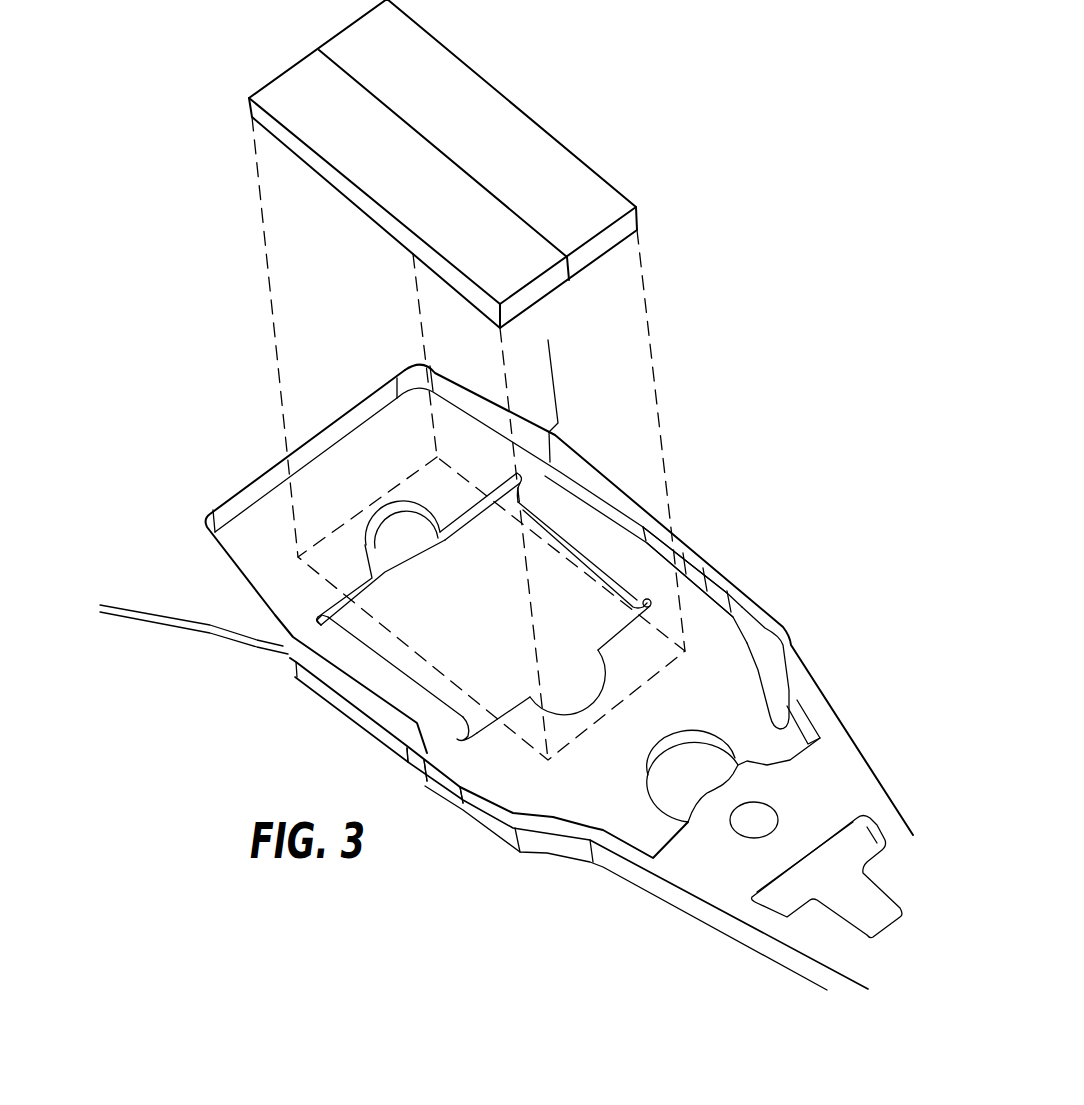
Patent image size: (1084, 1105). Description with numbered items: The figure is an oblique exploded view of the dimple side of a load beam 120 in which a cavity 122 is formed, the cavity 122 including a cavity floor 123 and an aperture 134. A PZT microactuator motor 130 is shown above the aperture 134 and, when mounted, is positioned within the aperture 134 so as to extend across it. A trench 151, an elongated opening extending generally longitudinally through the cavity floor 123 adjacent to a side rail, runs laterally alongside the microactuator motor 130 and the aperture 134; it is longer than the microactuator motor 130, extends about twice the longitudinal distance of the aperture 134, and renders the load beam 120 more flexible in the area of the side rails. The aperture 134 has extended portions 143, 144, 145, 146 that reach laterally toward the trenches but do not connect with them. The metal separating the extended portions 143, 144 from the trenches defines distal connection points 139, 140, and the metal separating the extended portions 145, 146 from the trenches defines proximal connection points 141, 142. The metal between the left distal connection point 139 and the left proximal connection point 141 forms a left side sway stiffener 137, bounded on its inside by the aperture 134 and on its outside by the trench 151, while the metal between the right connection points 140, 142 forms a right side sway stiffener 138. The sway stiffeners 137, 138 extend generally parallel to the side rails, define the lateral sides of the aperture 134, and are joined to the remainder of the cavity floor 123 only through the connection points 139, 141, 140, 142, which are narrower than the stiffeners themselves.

The load beam 120 is at (178, 593).
The cavity 122 is at (702, 698).
The cavity floor 123 is at (658, 667).
The microactuator motor 130 is at (585, 88).
The aperture 134 is at (582, 593).
The left side sway stiffener 137 is at (577, 527).
The right side sway stiffener 138 is at (378, 675).
The left side distal connection point 139 is at (660, 597).
The right side distal connection point 140 is at (453, 748).
The left side proximal connection point 141 is at (532, 472).
The right side proximal connection point 142 is at (308, 633).
The aperture extended portion 143 is at (650, 600).
The aperture extended portion 144 is at (462, 737).
The aperture extended portion 145 is at (517, 470).
The aperture extended portion 146 is at (318, 620).
The trench 151 is at (717, 612).